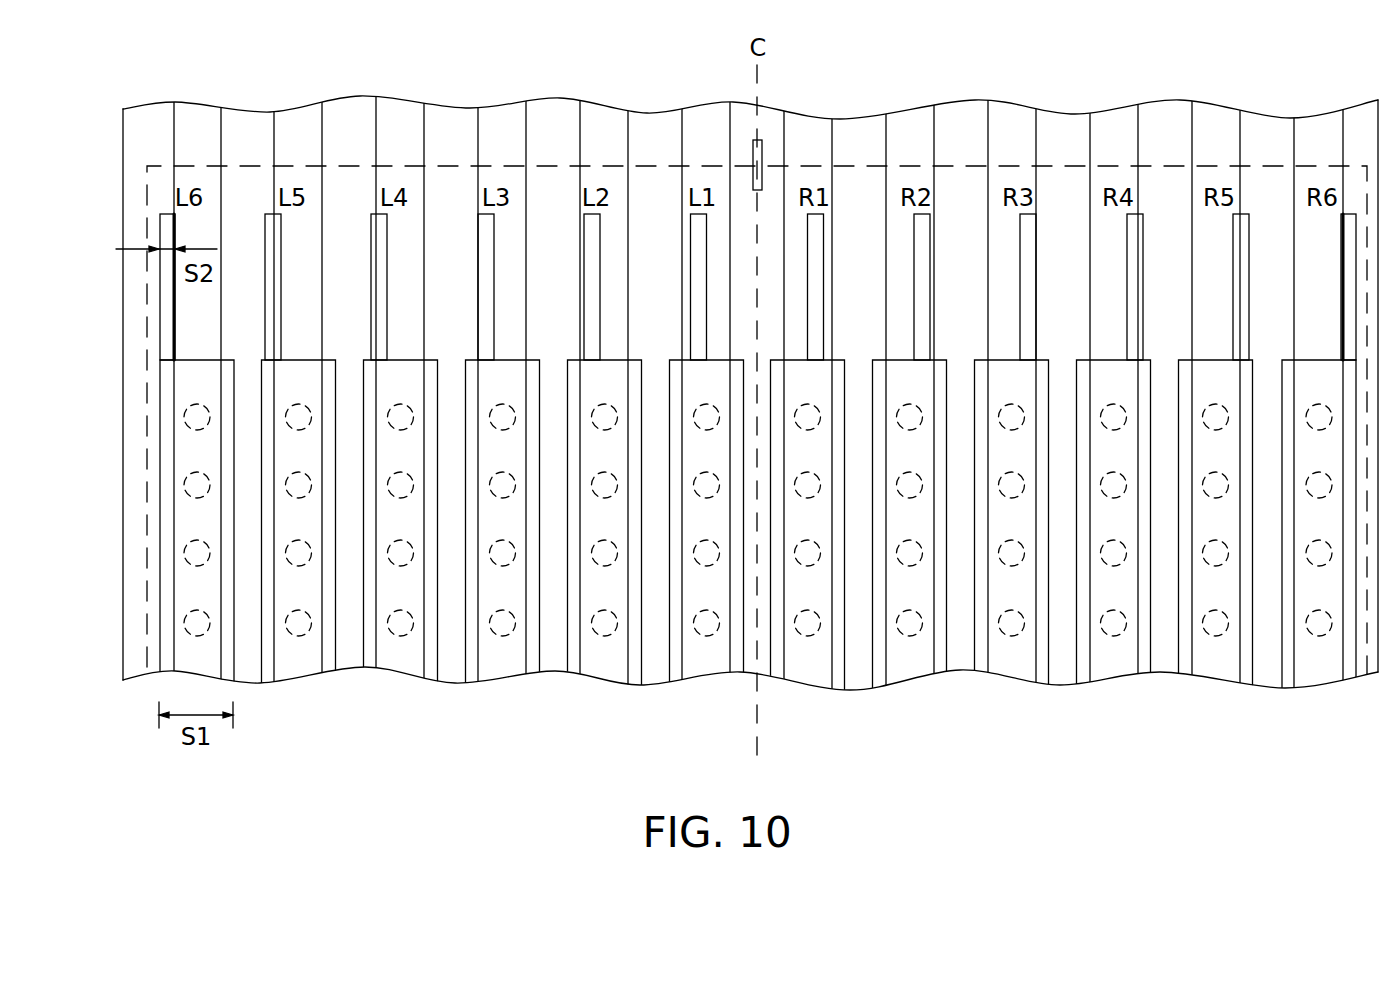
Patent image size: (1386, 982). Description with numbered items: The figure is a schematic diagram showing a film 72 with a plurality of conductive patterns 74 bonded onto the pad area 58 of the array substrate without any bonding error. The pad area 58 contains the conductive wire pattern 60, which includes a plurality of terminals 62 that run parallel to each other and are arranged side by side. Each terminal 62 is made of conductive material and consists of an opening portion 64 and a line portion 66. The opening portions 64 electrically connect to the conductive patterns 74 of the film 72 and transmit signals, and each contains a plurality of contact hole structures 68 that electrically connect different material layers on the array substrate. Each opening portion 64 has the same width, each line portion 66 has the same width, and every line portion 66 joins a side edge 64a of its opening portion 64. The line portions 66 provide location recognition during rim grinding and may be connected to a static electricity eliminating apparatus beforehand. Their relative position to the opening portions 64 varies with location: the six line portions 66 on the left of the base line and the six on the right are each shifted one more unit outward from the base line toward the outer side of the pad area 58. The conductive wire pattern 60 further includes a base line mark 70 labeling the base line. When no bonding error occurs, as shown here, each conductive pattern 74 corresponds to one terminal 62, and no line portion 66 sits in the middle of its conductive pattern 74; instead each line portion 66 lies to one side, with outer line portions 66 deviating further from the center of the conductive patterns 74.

The film 72 is at (152, 107).
The conductive pattern 74 is at (173, 160).
The line portion 66 is at (159, 313).
The terminal 62 is at (135, 395).
The opening portion 64 is at (159, 459).
The contact hole structure 68 is at (153, 520).
The base line mark 70 is at (762, 157).
The conductive wire pattern 60 is at (1180, 183).
The pad area 58 is at (1270, 166).
The side edge of the opening portion 64a is at (1304, 360).